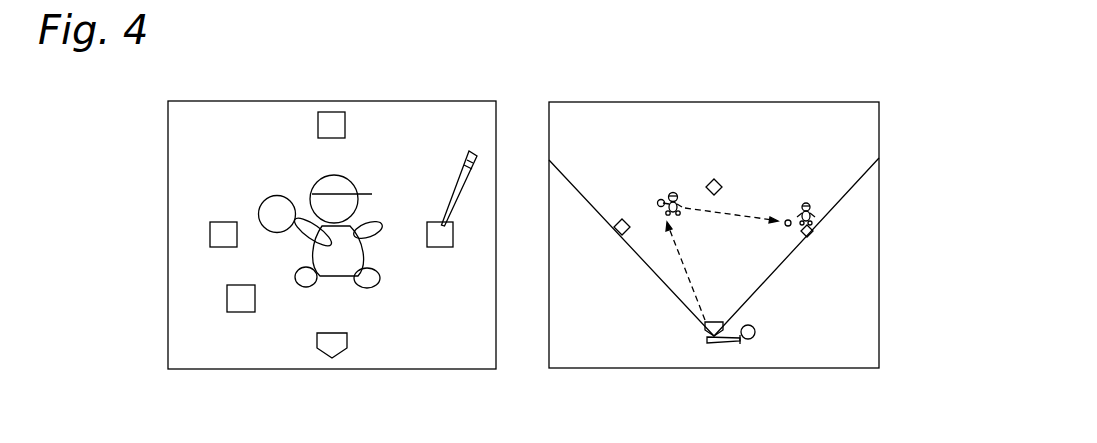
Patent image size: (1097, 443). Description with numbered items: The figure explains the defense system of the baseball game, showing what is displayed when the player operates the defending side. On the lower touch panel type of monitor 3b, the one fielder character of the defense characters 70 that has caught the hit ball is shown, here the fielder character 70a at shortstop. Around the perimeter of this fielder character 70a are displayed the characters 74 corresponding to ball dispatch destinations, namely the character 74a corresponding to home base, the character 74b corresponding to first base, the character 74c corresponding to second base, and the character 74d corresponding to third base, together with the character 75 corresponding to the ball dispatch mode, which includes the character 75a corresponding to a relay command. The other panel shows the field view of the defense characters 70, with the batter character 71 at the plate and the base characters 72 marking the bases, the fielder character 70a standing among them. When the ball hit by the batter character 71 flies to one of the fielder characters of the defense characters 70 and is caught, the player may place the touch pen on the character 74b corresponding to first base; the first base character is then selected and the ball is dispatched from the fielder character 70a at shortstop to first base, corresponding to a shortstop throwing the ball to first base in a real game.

The lower touch panel type of monitor 3b is at (402, 371).
The defense characters 70 is at (688, 128).
The fielder character at shortstop 70a is at (370, 285).
The batter character 71 is at (755, 333).
The base characters 72 is at (720, 181).
The characters corresponding to ball dispatch destinations 74 is at (287, 119).
The character corresponding to home base 74a is at (330, 358).
The character corresponding to first base 74b is at (445, 247).
The character corresponding to second base 74c is at (345, 125).
The character corresponding to third base 74d is at (220, 222).
The character corresponding to the ball dispatch mode 75 is at (199, 307).
The character corresponding to a relay command 75a is at (233, 312).